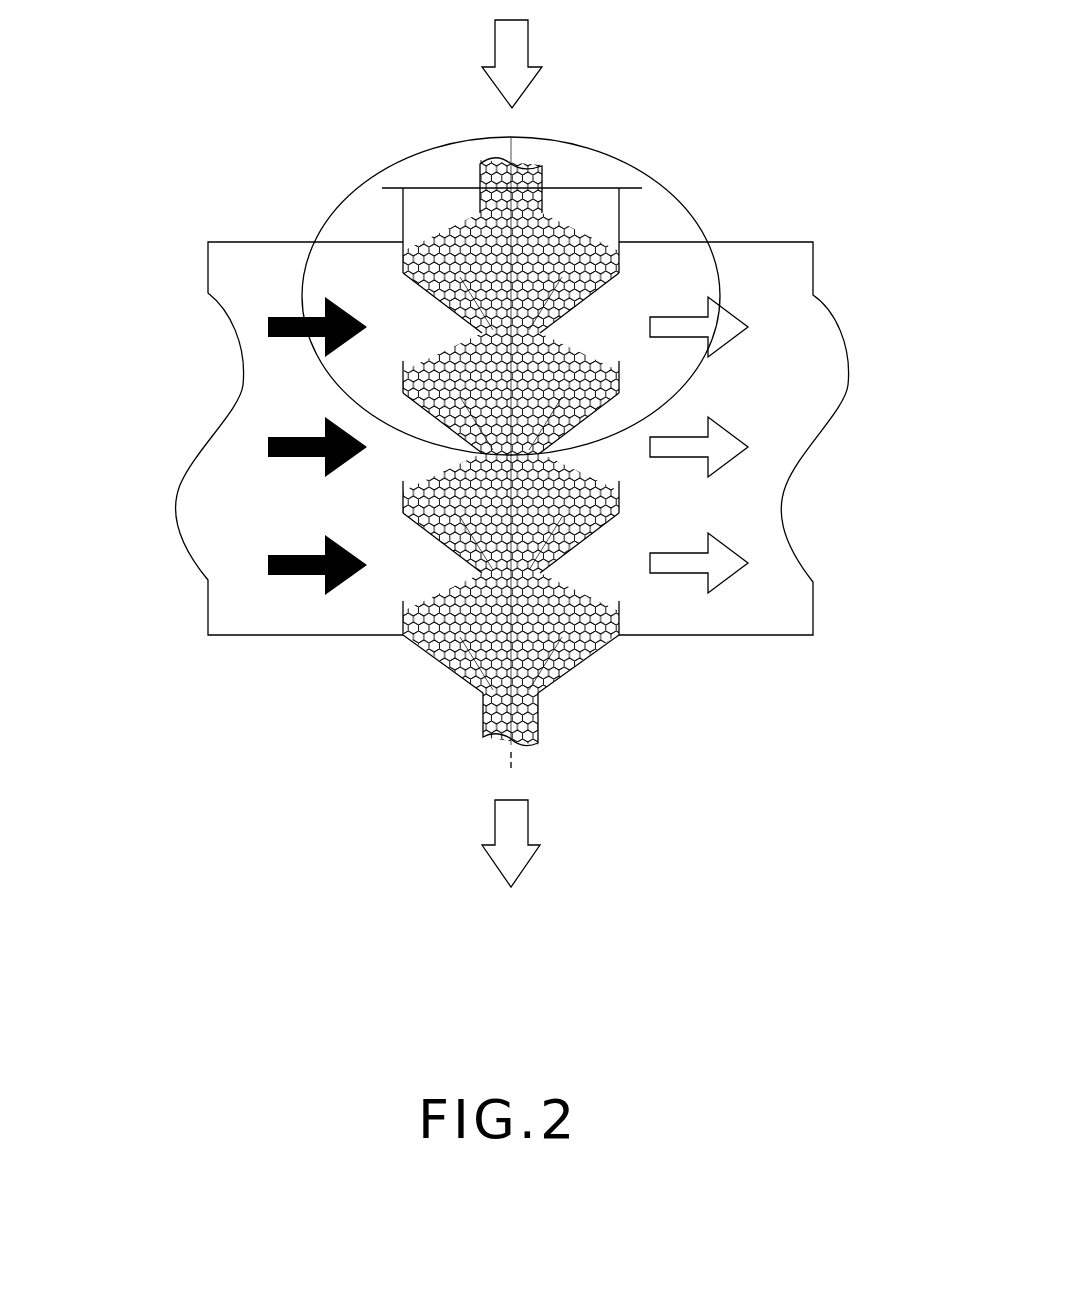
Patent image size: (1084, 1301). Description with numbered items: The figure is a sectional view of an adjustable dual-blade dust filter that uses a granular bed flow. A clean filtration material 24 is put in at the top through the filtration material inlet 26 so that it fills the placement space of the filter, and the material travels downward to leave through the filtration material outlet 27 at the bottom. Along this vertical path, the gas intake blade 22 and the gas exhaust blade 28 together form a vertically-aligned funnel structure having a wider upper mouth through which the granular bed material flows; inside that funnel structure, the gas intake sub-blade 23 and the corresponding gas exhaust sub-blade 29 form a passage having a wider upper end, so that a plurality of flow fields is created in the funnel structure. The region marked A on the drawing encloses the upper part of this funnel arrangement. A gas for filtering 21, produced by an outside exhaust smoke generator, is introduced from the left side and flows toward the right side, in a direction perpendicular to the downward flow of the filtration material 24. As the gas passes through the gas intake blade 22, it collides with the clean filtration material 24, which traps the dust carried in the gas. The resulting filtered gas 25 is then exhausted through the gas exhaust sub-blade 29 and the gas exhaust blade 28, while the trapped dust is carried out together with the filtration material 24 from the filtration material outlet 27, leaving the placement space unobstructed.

The gas for filtering 21 is at (295, 433).
The gas intake blade 22 is at (403, 230).
The gas intake sub-blade 23 is at (477, 669).
The filtration material 24 is at (527, 174).
The filtered gas 25 is at (730, 428).
The filtration material inlet 26 is at (528, 40).
The filtration material outlet 27 is at (528, 820).
The gas exhaust blade 28 is at (620, 232).
The gas exhaust sub-blade 29 is at (547, 663).
The region A is at (598, 150).